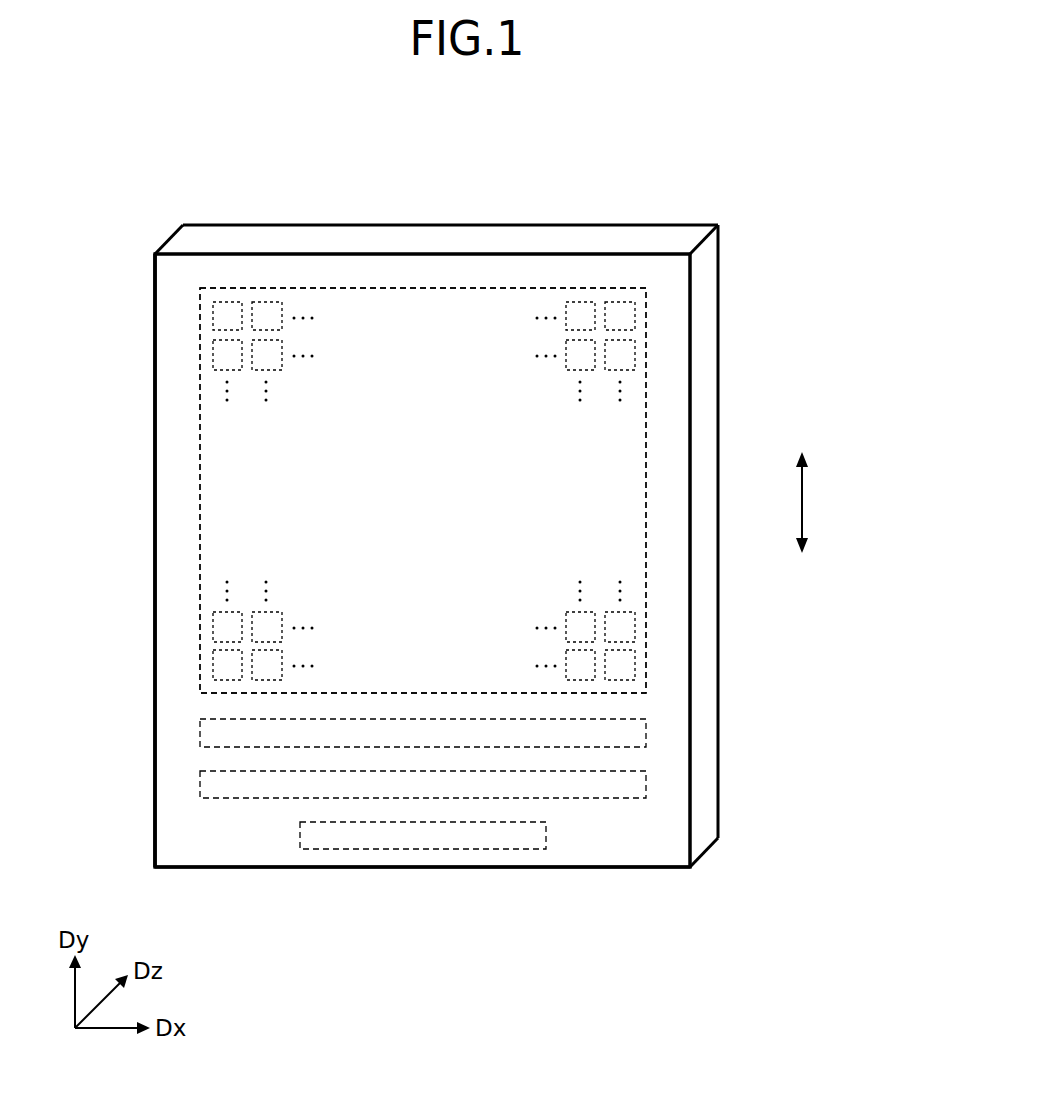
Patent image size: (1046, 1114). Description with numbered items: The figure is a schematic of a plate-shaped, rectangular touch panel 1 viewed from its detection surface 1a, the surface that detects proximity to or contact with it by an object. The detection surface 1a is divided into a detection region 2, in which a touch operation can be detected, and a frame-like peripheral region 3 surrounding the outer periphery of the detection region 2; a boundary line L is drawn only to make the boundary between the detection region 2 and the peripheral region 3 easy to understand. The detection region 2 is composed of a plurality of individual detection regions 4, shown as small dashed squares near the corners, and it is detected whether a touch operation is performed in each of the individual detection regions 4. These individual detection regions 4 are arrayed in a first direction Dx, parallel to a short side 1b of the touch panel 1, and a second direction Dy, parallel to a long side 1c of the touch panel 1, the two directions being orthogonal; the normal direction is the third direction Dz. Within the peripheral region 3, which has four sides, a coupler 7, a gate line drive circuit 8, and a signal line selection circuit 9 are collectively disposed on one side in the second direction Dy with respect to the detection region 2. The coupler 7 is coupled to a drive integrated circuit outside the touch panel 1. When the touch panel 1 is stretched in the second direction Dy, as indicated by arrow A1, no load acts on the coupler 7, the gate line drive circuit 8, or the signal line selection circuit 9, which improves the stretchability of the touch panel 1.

The touch panel 1 is at (722, 139).
The detection surface 1a is at (238, 500).
The short side 1b is at (612, 868).
The long side 1c is at (155, 710).
The detection region 2 is at (459, 298).
The peripheral region 3 is at (162, 604).
The individual detection regions 4 is at (228, 300).
The coupler 7 is at (433, 850).
The gate line drive circuit 8 is at (646, 731).
The signal line selection circuit 9 is at (646, 782).
The boundary line L is at (377, 288).
The arrow A1 is at (818, 502).